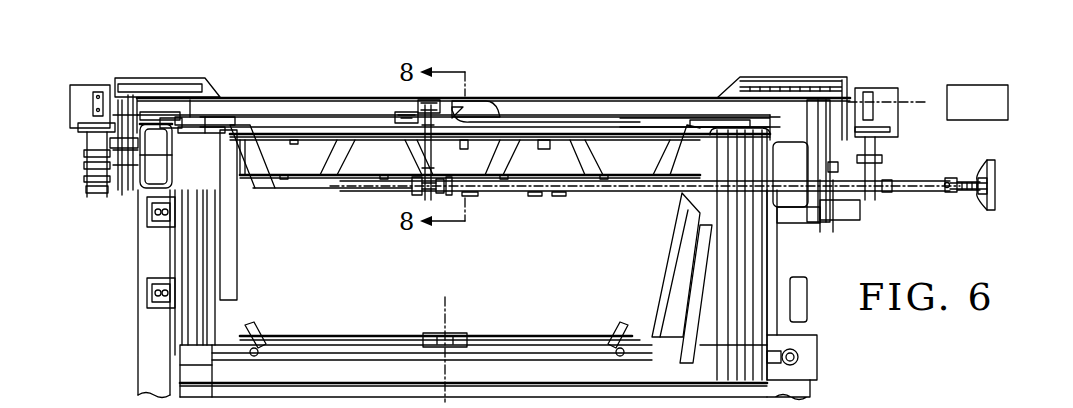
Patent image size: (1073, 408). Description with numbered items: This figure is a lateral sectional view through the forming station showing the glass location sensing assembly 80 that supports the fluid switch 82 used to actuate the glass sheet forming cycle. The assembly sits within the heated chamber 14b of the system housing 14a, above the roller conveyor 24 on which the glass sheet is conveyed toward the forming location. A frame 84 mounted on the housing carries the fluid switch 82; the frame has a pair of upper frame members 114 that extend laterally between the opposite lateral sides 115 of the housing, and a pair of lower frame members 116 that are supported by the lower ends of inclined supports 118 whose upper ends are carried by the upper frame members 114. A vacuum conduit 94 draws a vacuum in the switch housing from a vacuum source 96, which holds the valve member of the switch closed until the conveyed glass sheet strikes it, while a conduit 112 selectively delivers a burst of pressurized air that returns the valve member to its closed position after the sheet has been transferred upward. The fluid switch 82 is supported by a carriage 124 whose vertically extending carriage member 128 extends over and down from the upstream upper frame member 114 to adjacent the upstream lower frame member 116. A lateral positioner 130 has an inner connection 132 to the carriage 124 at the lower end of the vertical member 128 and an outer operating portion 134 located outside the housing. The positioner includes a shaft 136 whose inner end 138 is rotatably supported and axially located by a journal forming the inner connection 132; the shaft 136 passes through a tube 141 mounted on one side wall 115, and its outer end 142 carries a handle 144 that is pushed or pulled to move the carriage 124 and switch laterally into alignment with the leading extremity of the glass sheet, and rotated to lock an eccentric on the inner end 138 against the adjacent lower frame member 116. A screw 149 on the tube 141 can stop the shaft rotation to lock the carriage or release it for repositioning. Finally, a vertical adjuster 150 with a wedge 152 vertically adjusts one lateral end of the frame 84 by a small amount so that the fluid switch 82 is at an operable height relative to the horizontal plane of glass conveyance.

The housing 14a is at (190, 253).
The heated chamber 14b is at (332, 278).
The roller conveyor 24 is at (307, 97).
The glass location sensing assembly 80 is at (497, 45).
The fluid switch 82 is at (404, 103).
The frame 84 is at (548, 112).
The vacuum conduit 94 is at (472, 92).
The vacuum source 96 is at (980, 85).
The conduit 112 is at (620, 97).
The upper frame members 114 is at (653, 132).
The lateral sides 115 is at (162, 140).
The lower frame members 116 is at (327, 182).
The inclined supports 118 is at (332, 148).
The carriage 124 is at (374, 108).
The vertically extending carriage member 128 is at (418, 163).
The lateral positioner 130 is at (607, 198).
The inner connection 132 is at (433, 193).
The outer operating portion 134 is at (974, 215).
The shaft 136 is at (558, 193).
The inner end 138 is at (470, 193).
The tube 141 is at (893, 192).
The outer end 142 is at (962, 192).
The handle 144 is at (997, 172).
The screw 149 is at (947, 180).
The vertical adjuster 150 is at (150, 108).
The wedge 152 is at (148, 188).